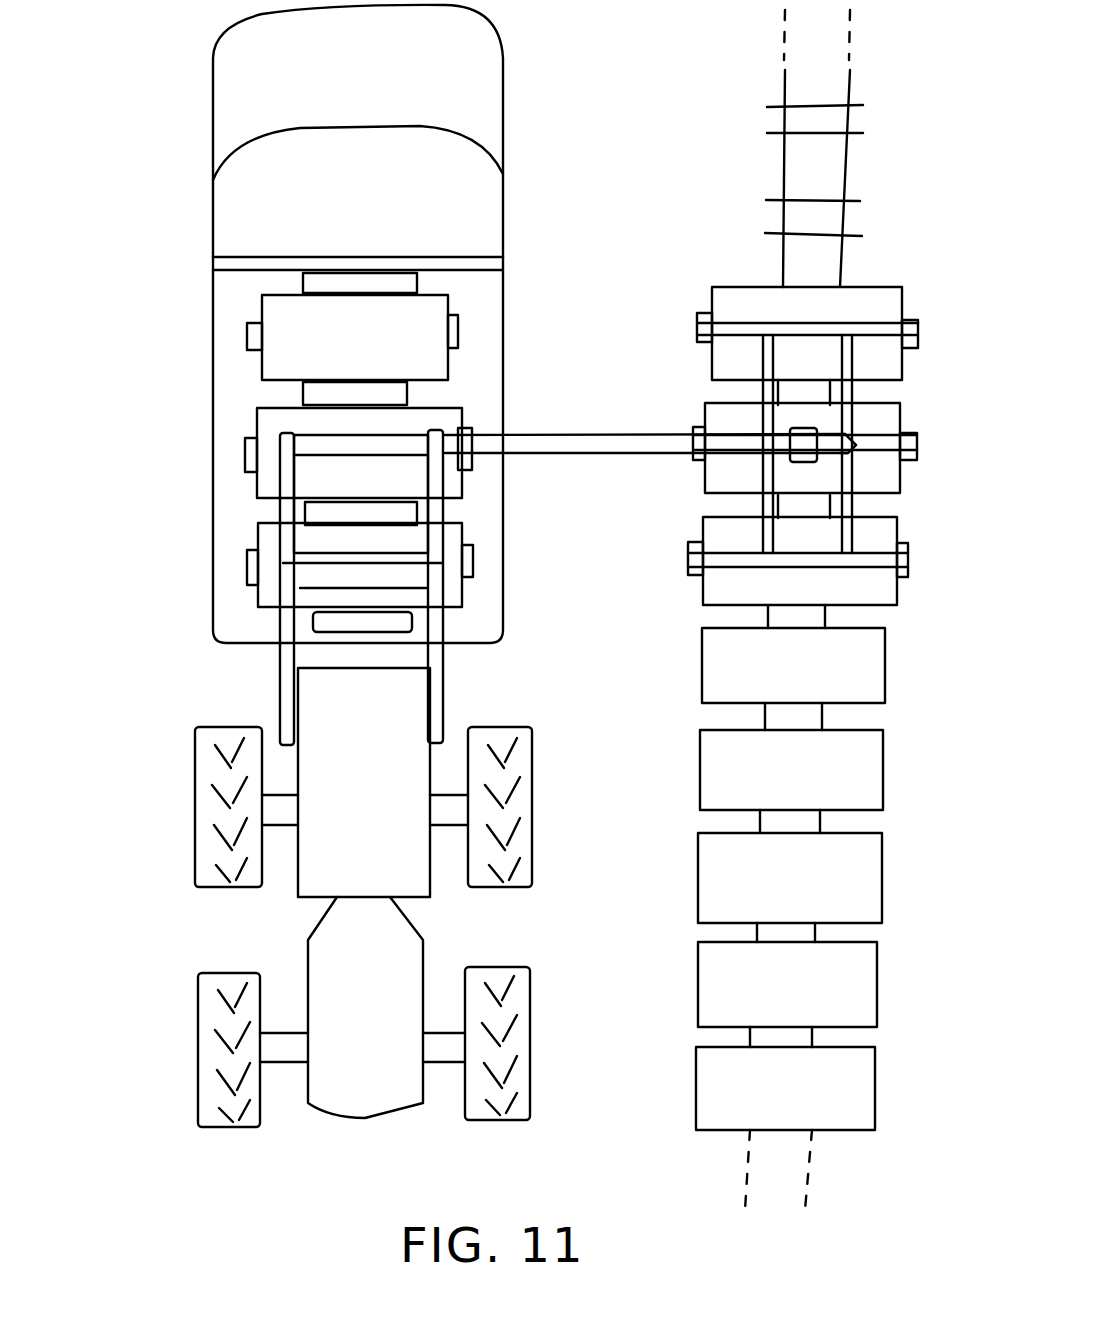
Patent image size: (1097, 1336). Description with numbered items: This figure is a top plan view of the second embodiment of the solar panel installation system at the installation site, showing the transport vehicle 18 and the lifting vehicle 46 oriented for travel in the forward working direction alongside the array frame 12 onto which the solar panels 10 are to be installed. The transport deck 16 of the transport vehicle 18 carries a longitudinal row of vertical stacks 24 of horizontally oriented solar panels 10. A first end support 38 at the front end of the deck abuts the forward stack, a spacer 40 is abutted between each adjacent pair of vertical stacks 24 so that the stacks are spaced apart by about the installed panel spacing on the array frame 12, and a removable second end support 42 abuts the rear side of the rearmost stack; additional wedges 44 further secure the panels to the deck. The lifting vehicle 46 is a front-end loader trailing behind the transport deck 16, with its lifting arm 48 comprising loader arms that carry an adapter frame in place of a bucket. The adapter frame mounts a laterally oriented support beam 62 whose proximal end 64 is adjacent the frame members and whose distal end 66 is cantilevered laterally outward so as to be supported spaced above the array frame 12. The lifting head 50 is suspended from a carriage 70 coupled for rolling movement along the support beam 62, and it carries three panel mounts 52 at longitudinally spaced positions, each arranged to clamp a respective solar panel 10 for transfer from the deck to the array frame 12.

The solar panels 10 is at (292, 362).
The array frame 12 is at (762, 180).
The transport deck 16 is at (497, 346).
The transport vehicle 18 is at (478, 197).
The vertical stacks 24 is at (245, 368).
The first end support 38 is at (418, 287).
The spacer 40 is at (407, 390).
The second end support 42 is at (415, 622).
The wedges 44 is at (247, 328).
The lifting vehicle 46 is at (128, 865).
The lifting arm 48 is at (285, 673).
The lifting head 50 is at (748, 361).
The panel mounts 52 is at (965, 330).
The support beam 62 is at (590, 450).
The proximal end 64 is at (262, 445).
The distal end 66 is at (843, 452).
The carriage 70 is at (800, 432).